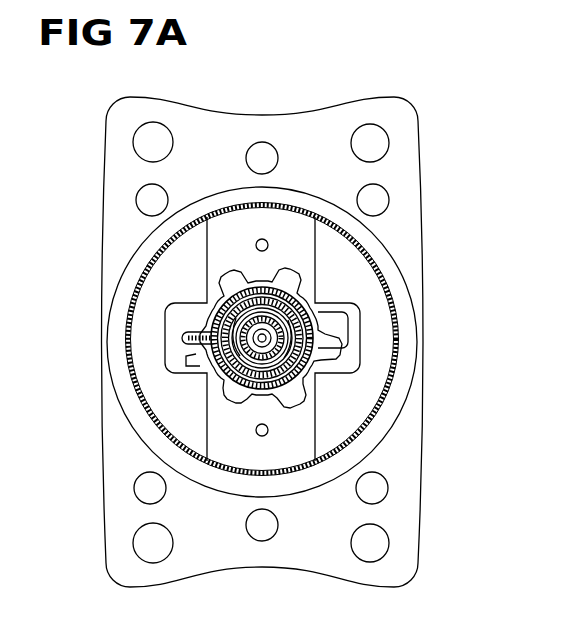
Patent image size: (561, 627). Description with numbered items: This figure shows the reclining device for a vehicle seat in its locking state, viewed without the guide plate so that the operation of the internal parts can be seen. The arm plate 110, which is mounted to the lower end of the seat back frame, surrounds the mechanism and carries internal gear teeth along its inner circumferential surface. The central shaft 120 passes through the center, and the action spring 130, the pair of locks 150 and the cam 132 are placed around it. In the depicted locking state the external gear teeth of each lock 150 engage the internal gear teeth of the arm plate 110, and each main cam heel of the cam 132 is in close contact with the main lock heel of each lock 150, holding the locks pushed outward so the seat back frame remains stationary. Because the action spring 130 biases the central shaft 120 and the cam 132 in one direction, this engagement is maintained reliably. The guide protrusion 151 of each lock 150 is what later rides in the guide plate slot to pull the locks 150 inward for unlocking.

The arm plate 110 is at (117, 350).
The central shaft 120 is at (322, 360).
The action spring 130 is at (316, 322).
The cam 132 is at (197, 360).
The lock 150 is at (300, 259).
The guide protrusion 151 is at (262, 238).